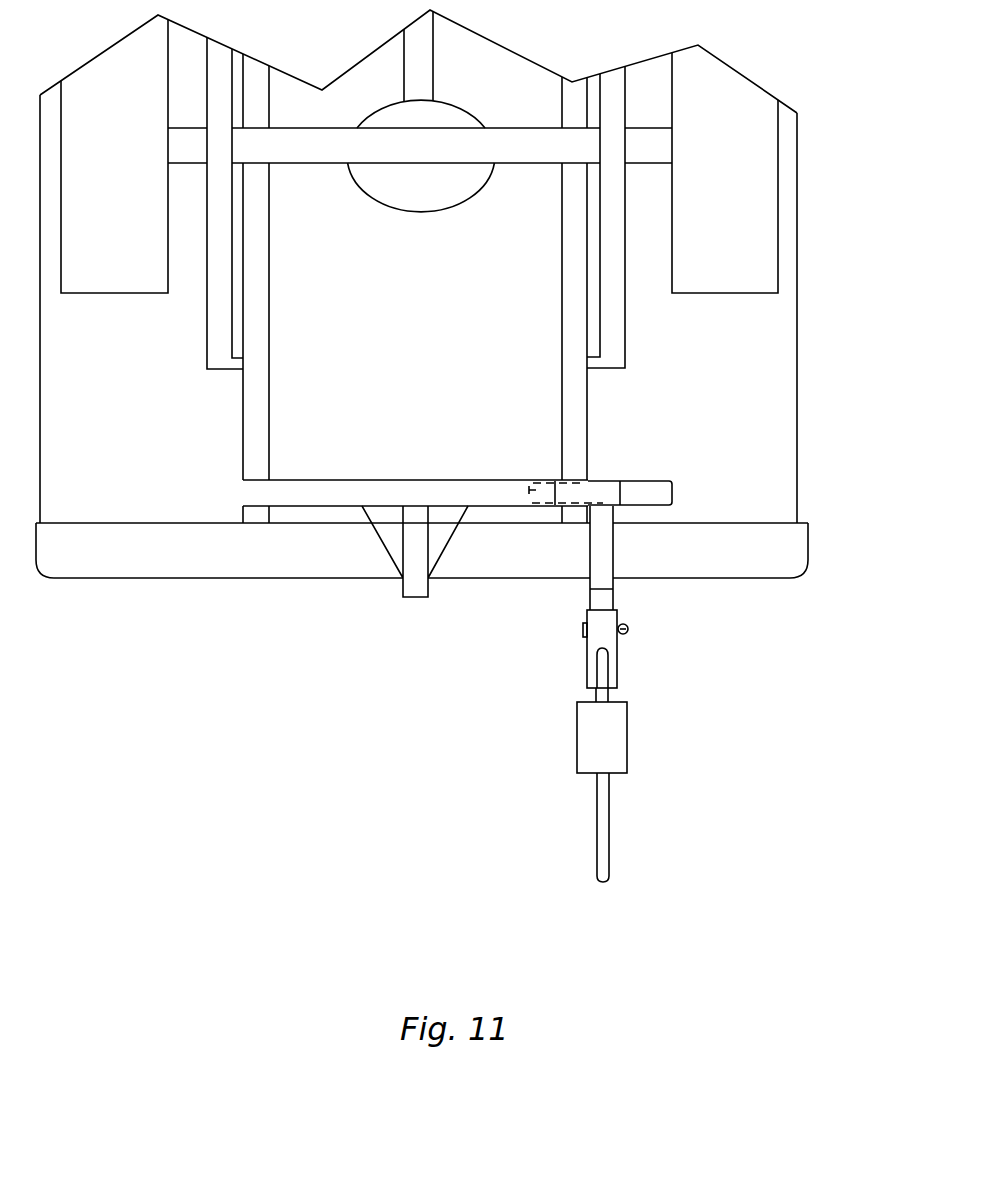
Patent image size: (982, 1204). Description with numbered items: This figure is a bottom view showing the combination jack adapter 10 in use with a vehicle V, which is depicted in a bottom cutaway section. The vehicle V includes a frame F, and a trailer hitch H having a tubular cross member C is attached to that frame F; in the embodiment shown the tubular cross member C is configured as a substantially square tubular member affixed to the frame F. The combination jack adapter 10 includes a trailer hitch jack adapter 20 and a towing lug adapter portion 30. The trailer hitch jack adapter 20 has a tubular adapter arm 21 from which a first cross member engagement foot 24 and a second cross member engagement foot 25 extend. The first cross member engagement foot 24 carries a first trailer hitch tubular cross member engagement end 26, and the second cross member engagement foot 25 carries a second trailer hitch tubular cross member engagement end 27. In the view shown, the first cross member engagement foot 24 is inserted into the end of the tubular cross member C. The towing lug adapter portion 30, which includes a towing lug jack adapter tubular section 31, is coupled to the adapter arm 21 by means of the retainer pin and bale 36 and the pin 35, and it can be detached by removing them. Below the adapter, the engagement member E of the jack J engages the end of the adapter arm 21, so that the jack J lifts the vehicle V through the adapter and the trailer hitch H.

The vehicle V is at (797, 157).
The frame F is at (270, 292).
The tubular cross member C is at (317, 487).
The trailer hitch H is at (402, 583).
The combination jack adapter 10 is at (454, 700).
The trailer hitch jack adapter 20 is at (700, 426).
The adapter arm 21 is at (597, 558).
The first cross member engagement foot 24 is at (557, 488).
The second cross member engagement foot 25 is at (620, 487).
The first trailer hitch tubular cross member engagement end 26 is at (530, 489).
The second trailer hitch tubular cross member engagement end 27 is at (672, 493).
The towing lug adapter portion 30 is at (553, 693).
The towing lug jack adapter tubular section 31 is at (608, 668).
The pin 35 is at (583, 630).
The retainer pin and bale 36 is at (628, 629).
The engagement member E is at (608, 697).
The jack J is at (615, 767).